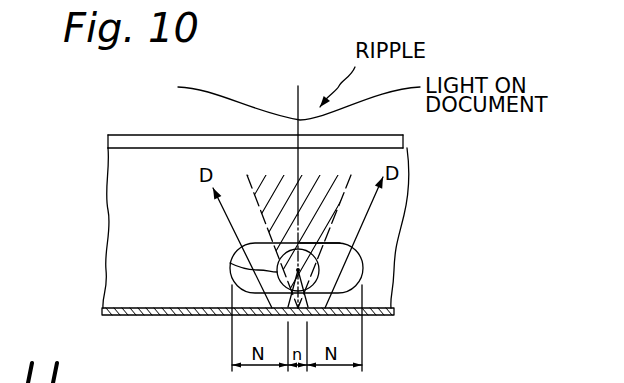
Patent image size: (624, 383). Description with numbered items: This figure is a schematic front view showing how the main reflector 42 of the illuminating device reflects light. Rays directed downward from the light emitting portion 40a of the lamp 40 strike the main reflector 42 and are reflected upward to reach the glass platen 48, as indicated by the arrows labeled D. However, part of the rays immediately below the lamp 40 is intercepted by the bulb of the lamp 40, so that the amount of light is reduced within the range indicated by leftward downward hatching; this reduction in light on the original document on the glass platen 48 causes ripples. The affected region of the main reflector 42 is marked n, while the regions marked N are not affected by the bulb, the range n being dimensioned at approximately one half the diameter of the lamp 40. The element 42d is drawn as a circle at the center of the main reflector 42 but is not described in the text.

The glass platen 48 is at (403, 136).
The main reflector 42 is at (145, 292).
The lamp 40 is at (230, 263).
The light emitting portion 40a is at (333, 235).
The illuminated spot region 42d is at (363, 268).